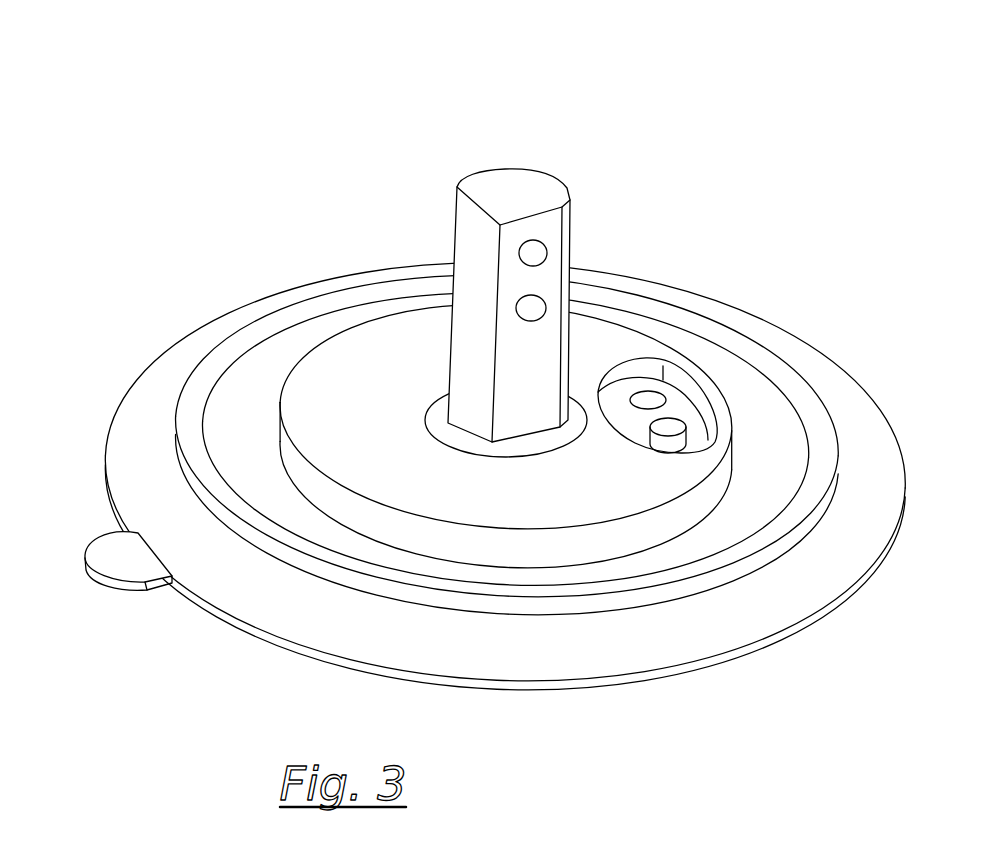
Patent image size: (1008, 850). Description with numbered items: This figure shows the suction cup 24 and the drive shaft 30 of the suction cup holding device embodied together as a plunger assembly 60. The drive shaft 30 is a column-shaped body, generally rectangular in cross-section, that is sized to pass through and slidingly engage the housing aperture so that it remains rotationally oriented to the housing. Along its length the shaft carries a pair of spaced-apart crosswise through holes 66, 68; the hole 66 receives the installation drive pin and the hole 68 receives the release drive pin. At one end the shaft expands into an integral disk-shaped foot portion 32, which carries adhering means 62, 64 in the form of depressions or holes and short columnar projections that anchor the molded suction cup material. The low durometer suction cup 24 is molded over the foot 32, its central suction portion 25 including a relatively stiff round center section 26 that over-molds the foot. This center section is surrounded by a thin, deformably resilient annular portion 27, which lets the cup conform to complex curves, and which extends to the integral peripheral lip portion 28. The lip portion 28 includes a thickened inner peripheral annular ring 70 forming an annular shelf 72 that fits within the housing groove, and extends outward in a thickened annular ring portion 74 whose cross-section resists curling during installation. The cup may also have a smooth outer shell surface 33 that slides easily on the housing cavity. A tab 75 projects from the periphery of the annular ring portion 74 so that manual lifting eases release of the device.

The suction cup 24 is at (622, 681).
The central suction portion 25 is at (292, 512).
The round center section 26 is at (358, 406).
The deformably resilient annular portion 27 is at (757, 500).
The peripheral lip portion 28 is at (148, 425).
The drive shaft 30 is at (530, 295).
The foot portion 32 is at (718, 381).
The outer shell surface 33 is at (603, 540).
The plunger assembly 60 is at (570, 106).
The adhering means (depressions or holes) 62 is at (649, 392).
The adhering means (columnar projections) 64 is at (677, 420).
The through hole 66 is at (546, 249).
The through hole 68 is at (546, 306).
The inner peripheral annular ring 70 is at (207, 352).
The annular shelf 72 is at (215, 406).
The annular ring portion 74 is at (160, 377).
The tab 75 is at (106, 540).